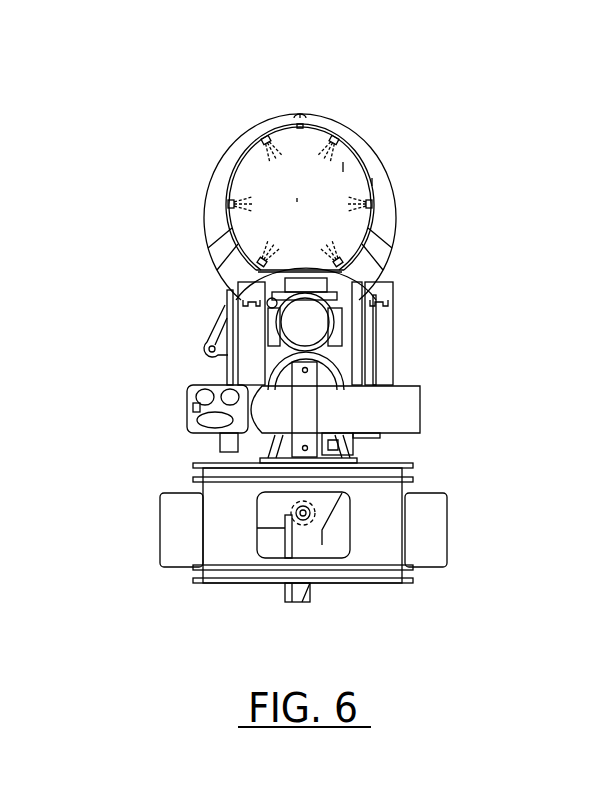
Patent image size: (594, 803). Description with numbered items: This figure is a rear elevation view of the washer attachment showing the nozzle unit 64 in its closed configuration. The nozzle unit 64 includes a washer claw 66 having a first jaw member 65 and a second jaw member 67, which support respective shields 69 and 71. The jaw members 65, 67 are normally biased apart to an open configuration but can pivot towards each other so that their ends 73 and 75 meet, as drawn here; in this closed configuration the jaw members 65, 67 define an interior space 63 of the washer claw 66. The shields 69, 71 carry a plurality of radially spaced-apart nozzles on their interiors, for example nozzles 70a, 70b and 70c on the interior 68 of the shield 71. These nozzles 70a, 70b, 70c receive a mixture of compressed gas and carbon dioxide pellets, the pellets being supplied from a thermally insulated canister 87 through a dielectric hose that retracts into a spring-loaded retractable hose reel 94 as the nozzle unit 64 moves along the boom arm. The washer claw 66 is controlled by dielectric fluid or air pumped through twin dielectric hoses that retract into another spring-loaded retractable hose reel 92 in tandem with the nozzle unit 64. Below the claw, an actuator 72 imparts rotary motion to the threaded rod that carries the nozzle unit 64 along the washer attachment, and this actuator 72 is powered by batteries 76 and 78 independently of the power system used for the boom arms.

The interior space 63 is at (297, 200).
The nozzle unit 64 is at (178, 100).
The first jaw member 65 is at (218, 195).
The washer claw 66 is at (205, 223).
The second jaw member 67 is at (380, 220).
The interior of the shield 68 is at (343, 167).
The shield 69 is at (236, 168).
The nozzle 70a is at (343, 140).
The nozzle 70b is at (372, 202).
The nozzle 70c is at (332, 251).
The shield 71 is at (372, 181).
The actuator 72 is at (305, 322).
The end of the first jaw member 73 is at (297, 116).
The end of the second jaw member 75 is at (303, 116).
The battery 76 is at (183, 530).
The battery 78 is at (423, 530).
The canister 87 is at (395, 408).
The retractable hose reel 92 is at (377, 360).
The retractable hose reel 94 is at (227, 365).